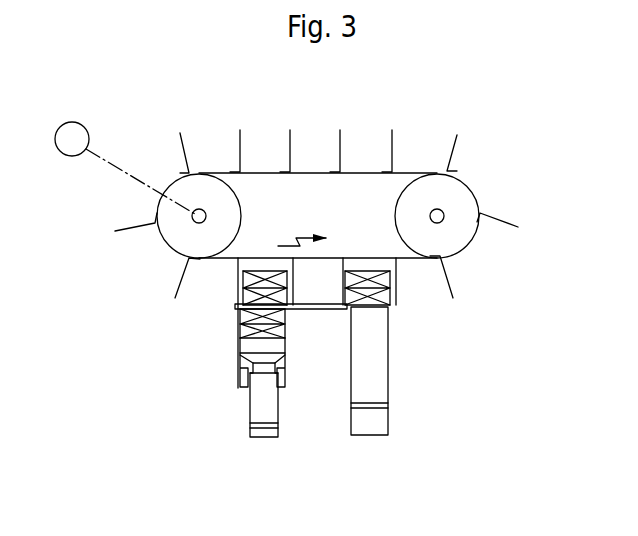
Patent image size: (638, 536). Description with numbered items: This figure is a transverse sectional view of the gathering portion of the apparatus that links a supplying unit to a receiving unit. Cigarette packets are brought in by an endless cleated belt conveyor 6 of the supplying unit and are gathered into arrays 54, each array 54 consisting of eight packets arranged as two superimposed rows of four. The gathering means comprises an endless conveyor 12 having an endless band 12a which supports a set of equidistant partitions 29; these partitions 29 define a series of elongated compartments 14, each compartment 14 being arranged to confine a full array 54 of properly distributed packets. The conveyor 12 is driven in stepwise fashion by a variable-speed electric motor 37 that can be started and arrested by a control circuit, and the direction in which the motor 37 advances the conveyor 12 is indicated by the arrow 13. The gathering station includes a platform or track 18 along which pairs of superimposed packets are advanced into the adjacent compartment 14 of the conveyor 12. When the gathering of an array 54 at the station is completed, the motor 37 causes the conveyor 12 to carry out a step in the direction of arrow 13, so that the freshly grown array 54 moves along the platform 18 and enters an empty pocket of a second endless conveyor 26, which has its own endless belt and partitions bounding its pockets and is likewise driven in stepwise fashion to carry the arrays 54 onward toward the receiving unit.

The endless cleated belt conveyor 6 is at (241, 400).
The endless conveyor 12 is at (464, 149).
The endless band 12a is at (412, 171).
The arrow 13 is at (307, 238).
The compartments 14 is at (211, 153).
The platform or track 18 is at (316, 311).
The second endless conveyor 26 is at (392, 383).
The partitions 29 is at (392, 138).
The variable-speed electric motor 37 is at (87, 132).
The arrays 54 is at (258, 290).